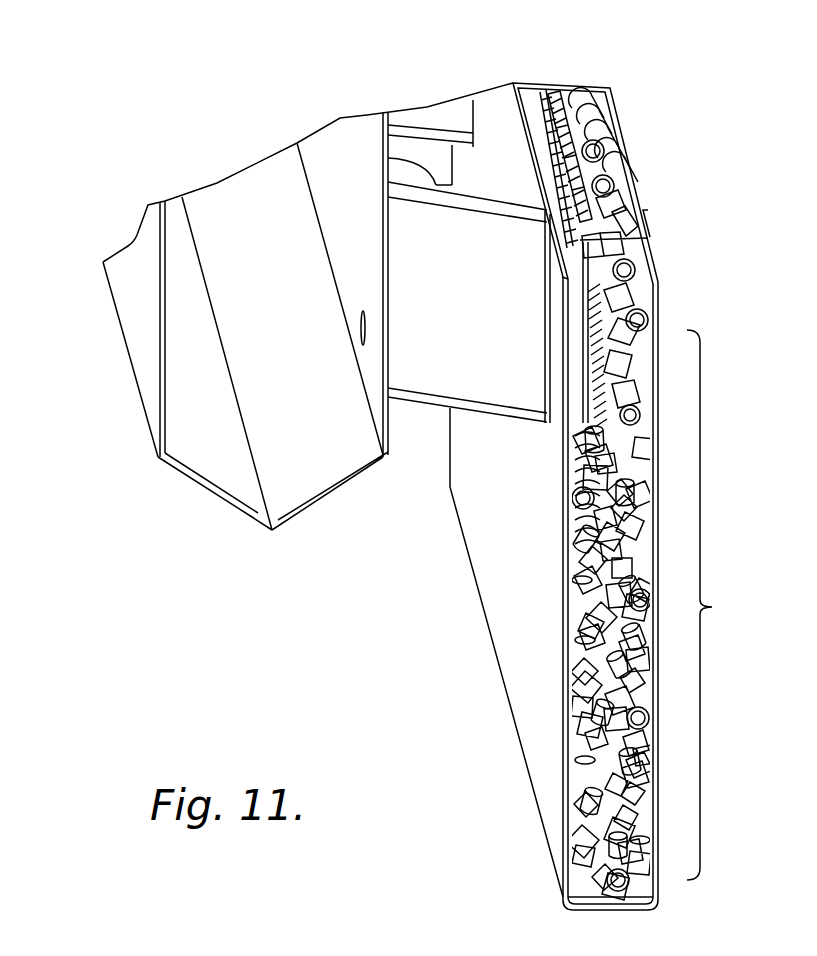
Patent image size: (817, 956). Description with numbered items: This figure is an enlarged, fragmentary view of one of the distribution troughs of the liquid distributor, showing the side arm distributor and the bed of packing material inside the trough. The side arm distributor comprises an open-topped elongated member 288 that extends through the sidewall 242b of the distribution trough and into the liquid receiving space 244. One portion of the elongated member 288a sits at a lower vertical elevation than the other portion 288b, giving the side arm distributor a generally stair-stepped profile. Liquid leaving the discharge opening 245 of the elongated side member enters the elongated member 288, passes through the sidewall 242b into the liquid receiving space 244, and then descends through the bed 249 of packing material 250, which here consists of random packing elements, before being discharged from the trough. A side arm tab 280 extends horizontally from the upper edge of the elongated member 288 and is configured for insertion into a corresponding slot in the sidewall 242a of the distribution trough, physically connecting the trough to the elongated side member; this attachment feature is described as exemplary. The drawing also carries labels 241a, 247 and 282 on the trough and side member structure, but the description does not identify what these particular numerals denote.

The housing side wall 241a is at (373, 393).
The sidewall 242a is at (660, 891).
The sidewall 242b is at (497, 557).
The liquid receiving space 244 is at (650, 273).
The discharge opening 245 is at (358, 327).
The door edge 247 is at (218, 461).
The bed 249 is at (724, 605).
The packing material 250 is at (607, 672).
The side arm tab 280 is at (648, 213).
The item at transfer point 282 is at (642, 232).
The elongated member 288 is at (523, 190).
The portion of the elongated member 288a is at (575, 300).
The other portion of the elongated member 288b is at (388, 158).